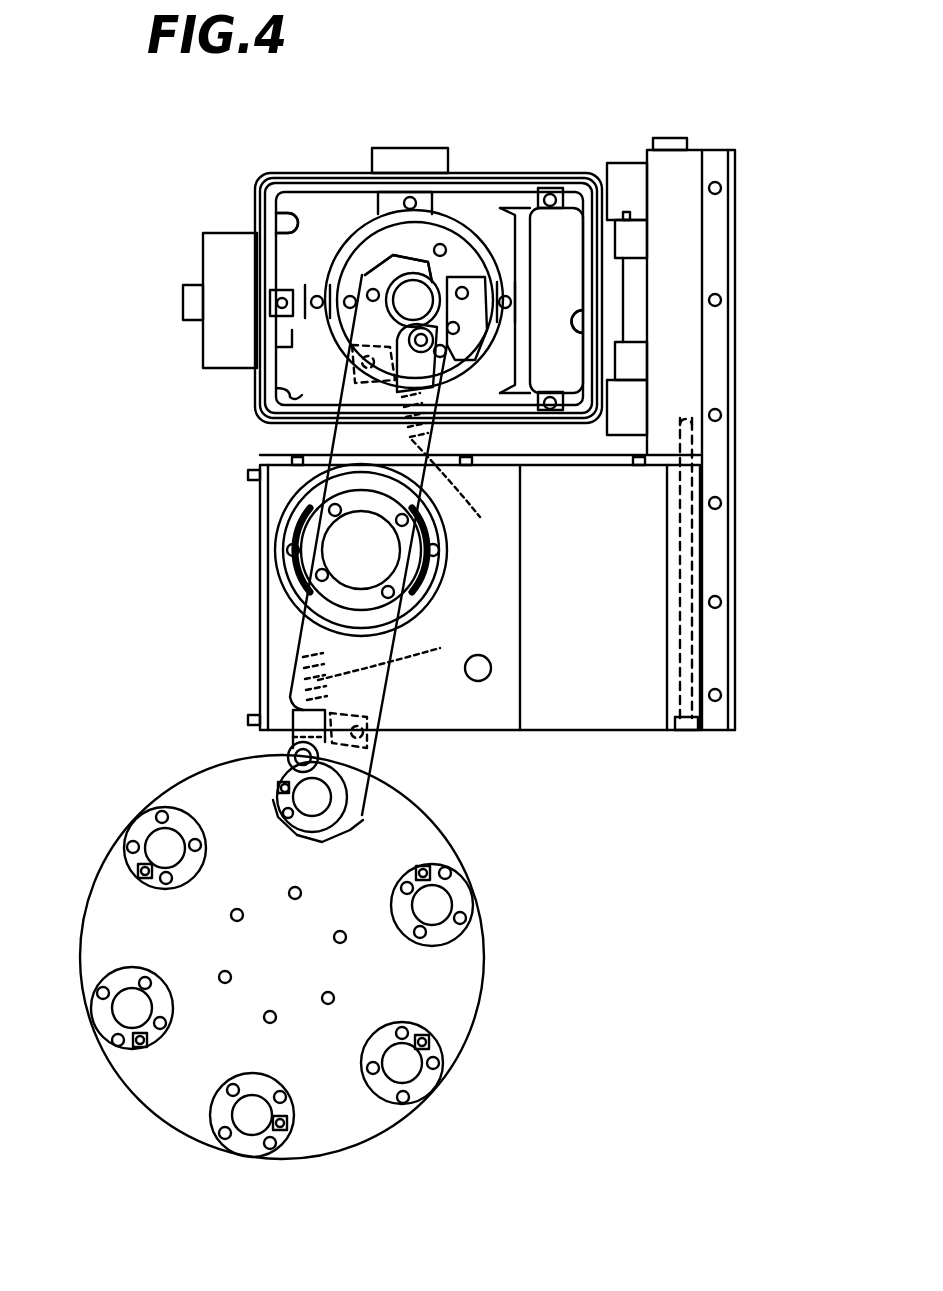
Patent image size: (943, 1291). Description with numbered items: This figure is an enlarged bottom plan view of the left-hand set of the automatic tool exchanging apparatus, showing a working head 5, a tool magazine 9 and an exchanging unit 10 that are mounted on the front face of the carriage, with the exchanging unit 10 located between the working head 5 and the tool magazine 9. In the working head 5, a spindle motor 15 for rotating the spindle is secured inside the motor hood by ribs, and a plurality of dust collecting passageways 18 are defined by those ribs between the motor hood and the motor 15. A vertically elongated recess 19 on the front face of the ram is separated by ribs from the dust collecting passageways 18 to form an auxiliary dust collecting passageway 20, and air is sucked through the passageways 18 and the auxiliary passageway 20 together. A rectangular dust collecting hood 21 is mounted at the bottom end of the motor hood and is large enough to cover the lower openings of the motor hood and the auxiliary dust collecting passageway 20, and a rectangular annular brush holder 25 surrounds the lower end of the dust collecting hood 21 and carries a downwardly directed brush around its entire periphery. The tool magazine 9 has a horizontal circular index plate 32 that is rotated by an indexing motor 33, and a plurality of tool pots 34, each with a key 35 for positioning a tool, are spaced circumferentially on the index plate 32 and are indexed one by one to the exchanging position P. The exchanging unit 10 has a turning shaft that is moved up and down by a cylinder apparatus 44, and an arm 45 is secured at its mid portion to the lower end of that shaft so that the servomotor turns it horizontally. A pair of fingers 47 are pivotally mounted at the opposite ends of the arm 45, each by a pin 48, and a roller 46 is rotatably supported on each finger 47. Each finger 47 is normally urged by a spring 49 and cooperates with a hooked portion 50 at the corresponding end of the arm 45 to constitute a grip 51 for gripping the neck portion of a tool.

The working head 5 is at (547, 150).
The tool magazine 9 is at (492, 1020).
The exchanging unit 10 is at (522, 690).
The spindle motor 15 is at (372, 343).
The dust collecting passageway 18 is at (335, 212).
The vertically elongated recess 19 is at (583, 332).
The auxiliary dust collecting passageway 20 is at (553, 272).
The dust collecting hood 21 is at (282, 212).
The brush holder 25 is at (318, 175).
The index plate 32 is at (338, 1147).
The indexing motor 33 is at (252, 1150).
The tool pot 34 is at (280, 787).
The key 35 is at (127, 870).
The cylinder apparatus 44 is at (505, 628).
The arm 45 is at (323, 623).
The roller 46 is at (453, 340).
The finger 47 is at (250, 312).
The pin 48 is at (330, 432).
The spring 49 is at (405, 546).
The hooked portion 50 is at (383, 262).
The grip 51 is at (138, 212).
The exchanging position P is at (372, 775).